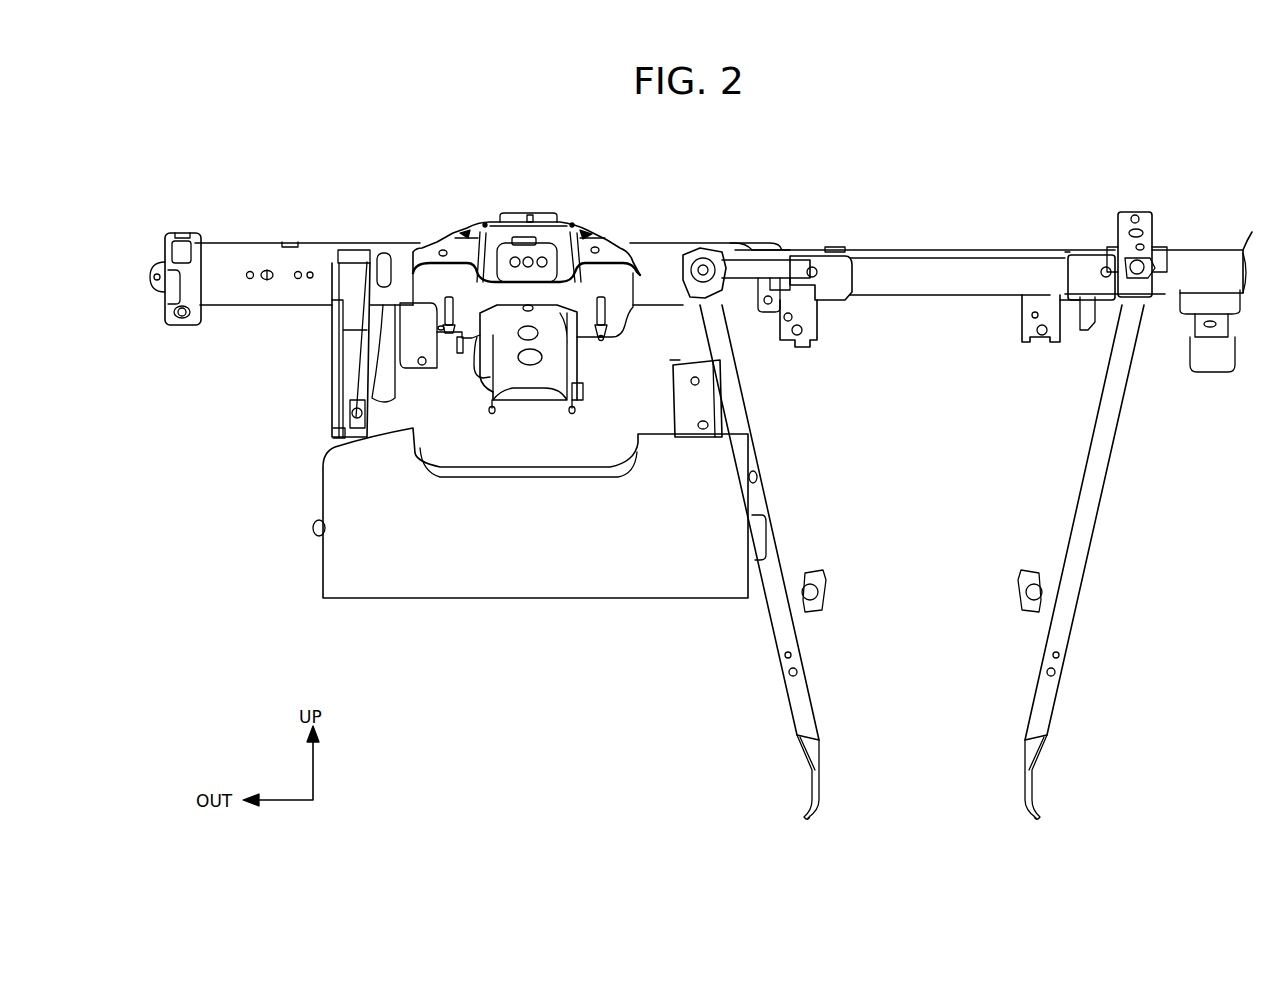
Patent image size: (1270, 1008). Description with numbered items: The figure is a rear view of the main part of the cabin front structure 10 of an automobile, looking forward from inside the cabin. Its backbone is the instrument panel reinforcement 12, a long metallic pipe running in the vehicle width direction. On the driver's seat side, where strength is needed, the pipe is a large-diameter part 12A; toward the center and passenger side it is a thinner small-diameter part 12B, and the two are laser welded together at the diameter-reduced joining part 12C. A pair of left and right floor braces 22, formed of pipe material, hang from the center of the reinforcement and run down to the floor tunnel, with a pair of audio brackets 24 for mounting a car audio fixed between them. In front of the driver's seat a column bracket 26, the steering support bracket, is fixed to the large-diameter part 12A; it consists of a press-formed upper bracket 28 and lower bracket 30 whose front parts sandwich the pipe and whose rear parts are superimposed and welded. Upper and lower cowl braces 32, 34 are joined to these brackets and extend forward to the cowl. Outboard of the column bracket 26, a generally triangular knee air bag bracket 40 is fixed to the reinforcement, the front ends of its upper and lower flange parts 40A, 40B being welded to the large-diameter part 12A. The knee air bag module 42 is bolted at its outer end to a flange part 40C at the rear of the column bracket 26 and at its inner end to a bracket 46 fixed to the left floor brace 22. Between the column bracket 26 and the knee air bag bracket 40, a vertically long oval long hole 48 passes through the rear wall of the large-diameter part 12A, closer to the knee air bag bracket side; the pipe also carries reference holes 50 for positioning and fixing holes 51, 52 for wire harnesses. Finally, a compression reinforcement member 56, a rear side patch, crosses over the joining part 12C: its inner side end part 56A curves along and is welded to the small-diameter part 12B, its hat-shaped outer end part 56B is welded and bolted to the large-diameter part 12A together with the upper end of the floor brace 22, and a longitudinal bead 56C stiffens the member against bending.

The cabin front structure 10 is at (601, 141).
The instrument panel reinforcement 12 is at (917, 246).
The large-diameter part 12A is at (228, 242).
The small-diameter part 12B is at (970, 250).
The joining part 12C is at (766, 245).
The floor braces 22 is at (805, 660).
The audio brackets 24 is at (838, 310).
The column bracket 26 is at (512, 214).
The upper bracket 28 is at (590, 233).
The lower bracket 30 is at (601, 338).
The upper cowl brace 32 is at (532, 216).
The lower cowl brace 34 is at (536, 400).
The knee air bag bracket 40 is at (326, 343).
The upper flange part 40A is at (355, 258).
The lower flange part 40B is at (372, 345).
The flange part 40C is at (345, 372).
The knee air bag module 42 is at (533, 600).
The bracket 46 is at (682, 390).
The long hole 48 is at (385, 262).
The reference holes 50 is at (297, 284).
The fixing hole 51 is at (291, 241).
The fixing hole 52 is at (1035, 250).
The compression reinforcement member 56 is at (786, 258).
The inner side end part 56A is at (806, 258).
The outer end part 56B is at (702, 258).
The bead 56C is at (745, 300).